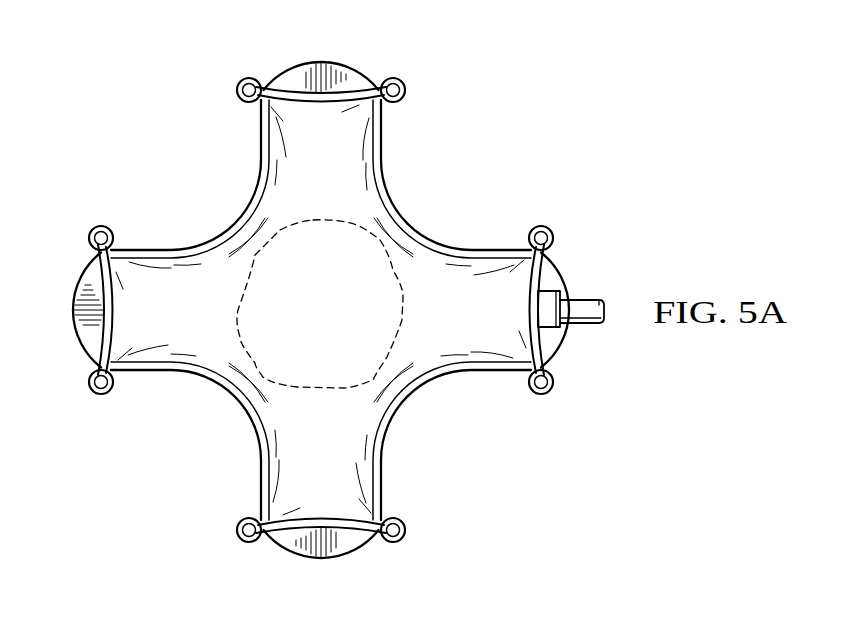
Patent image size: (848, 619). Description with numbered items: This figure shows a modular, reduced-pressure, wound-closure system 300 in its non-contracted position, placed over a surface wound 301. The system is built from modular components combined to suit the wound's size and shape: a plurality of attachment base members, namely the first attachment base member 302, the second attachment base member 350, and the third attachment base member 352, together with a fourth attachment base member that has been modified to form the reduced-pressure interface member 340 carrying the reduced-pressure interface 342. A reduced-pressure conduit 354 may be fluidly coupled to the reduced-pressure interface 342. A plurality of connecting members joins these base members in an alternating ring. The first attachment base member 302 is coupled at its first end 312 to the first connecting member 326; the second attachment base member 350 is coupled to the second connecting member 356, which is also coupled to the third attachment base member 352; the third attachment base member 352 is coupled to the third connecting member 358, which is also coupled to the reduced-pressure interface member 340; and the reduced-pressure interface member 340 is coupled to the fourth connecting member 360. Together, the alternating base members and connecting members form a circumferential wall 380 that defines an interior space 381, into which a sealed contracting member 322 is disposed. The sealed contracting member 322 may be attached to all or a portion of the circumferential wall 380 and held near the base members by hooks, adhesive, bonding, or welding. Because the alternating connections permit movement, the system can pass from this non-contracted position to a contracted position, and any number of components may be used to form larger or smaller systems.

The modular, reduced-pressure, wound-closure system 300 is at (318, 314).
The surface wound 301 is at (323, 388).
The first attachment base member 302 is at (333, 557).
The first end 312 is at (240, 533).
The sealed contracting member 322 is at (383, 172).
The first connecting member 326 is at (232, 400).
The reduced-pressure interface member 340 is at (560, 270).
The reduced-pressure interface 342 is at (547, 306).
The second attachment base member 350 is at (82, 342).
The third attachment base member 352 is at (292, 66).
The reduced-pressure conduit 354 is at (587, 324).
The second connecting member 356 is at (183, 244).
The third connecting member 358 is at (455, 247).
The fourth connecting member 360 is at (427, 390).
The circumferential wall 380 is at (389, 450).
The interior space 381 is at (385, 495).